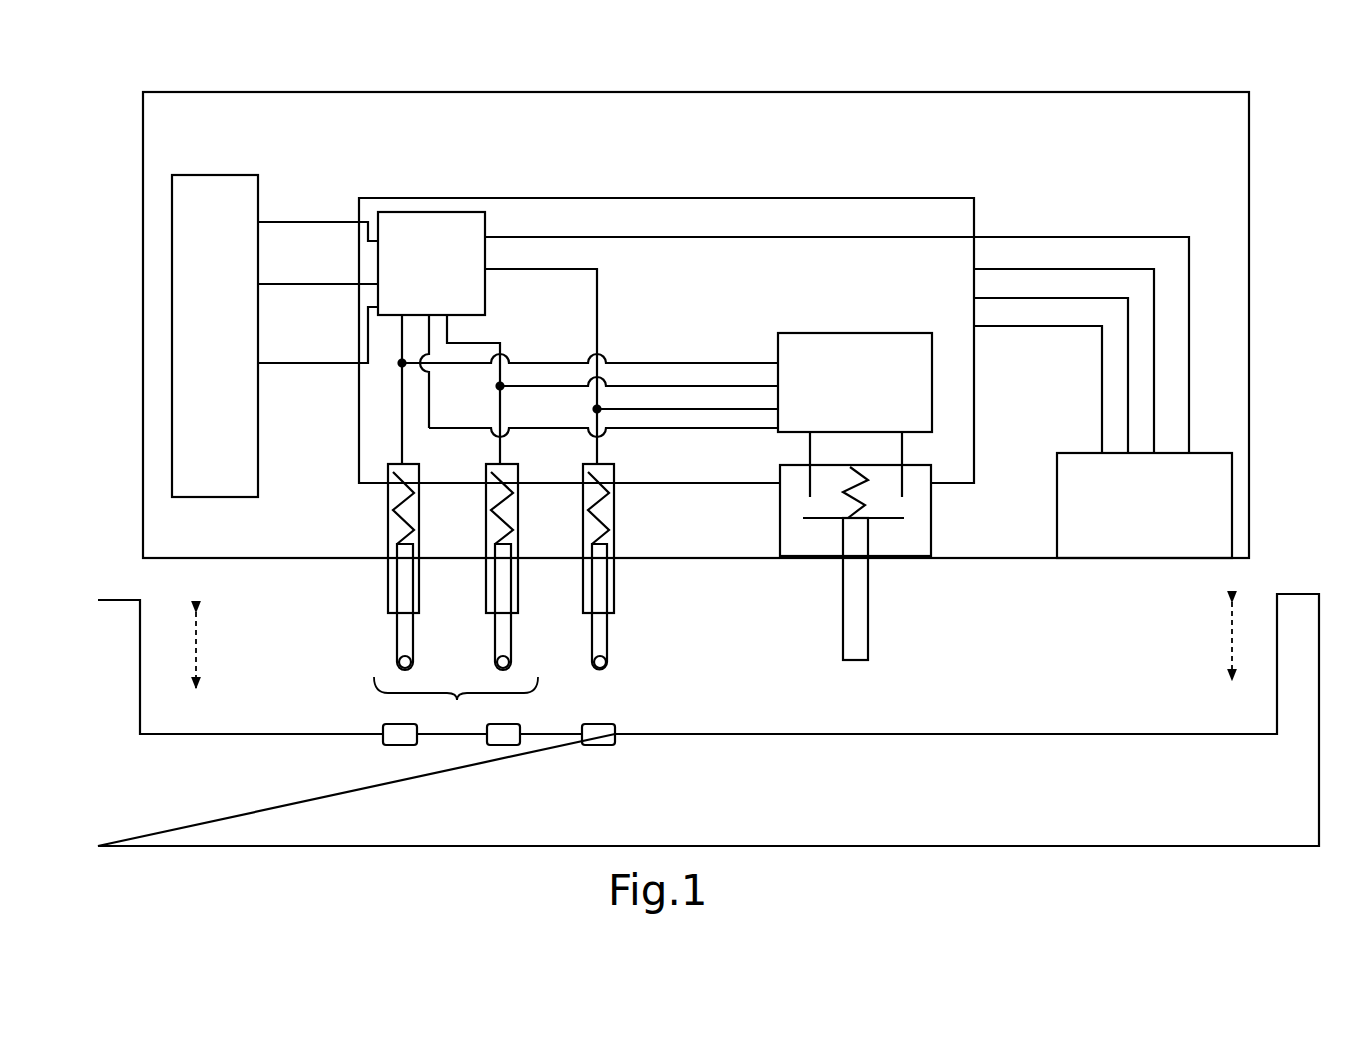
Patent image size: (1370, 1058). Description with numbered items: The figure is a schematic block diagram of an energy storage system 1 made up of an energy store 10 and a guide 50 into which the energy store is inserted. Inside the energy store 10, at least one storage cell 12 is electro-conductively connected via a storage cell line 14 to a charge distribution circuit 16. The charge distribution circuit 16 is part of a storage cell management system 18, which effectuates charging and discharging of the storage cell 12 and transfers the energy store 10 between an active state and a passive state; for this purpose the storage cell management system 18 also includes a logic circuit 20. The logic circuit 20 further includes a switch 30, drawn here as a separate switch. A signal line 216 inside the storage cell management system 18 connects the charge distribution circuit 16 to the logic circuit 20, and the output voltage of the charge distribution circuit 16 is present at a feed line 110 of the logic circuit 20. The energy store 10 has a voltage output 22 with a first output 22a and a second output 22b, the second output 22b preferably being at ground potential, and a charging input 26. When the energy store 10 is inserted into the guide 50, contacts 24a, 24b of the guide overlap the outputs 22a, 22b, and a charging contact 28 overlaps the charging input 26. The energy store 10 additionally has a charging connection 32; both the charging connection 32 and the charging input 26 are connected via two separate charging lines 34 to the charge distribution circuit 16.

The energy storage system 1 is at (98, 137).
The energy store 10 is at (1178, 75).
The storage cell 12 is at (208, 177).
The storage cell line 14 is at (313, 206).
The charge distribution circuit 16 is at (438, 212).
The storage cell management system 18 is at (513, 198).
The logic circuit 20 is at (822, 332).
The voltage output 22 is at (457, 706).
The first output 22a is at (420, 583).
The second output 22b is at (519, 583).
The contact 24a is at (398, 750).
The contact 24b is at (503, 748).
The charging input 26 is at (617, 570).
The charging contact 28 is at (600, 748).
The switch 30 is at (932, 527).
The charging connection 32 is at (1210, 452).
The charging lines 34 is at (634, 232).
The guide 50 is at (1163, 870).
The feed line 110 is at (664, 352).
The signal line 216 is at (724, 424).